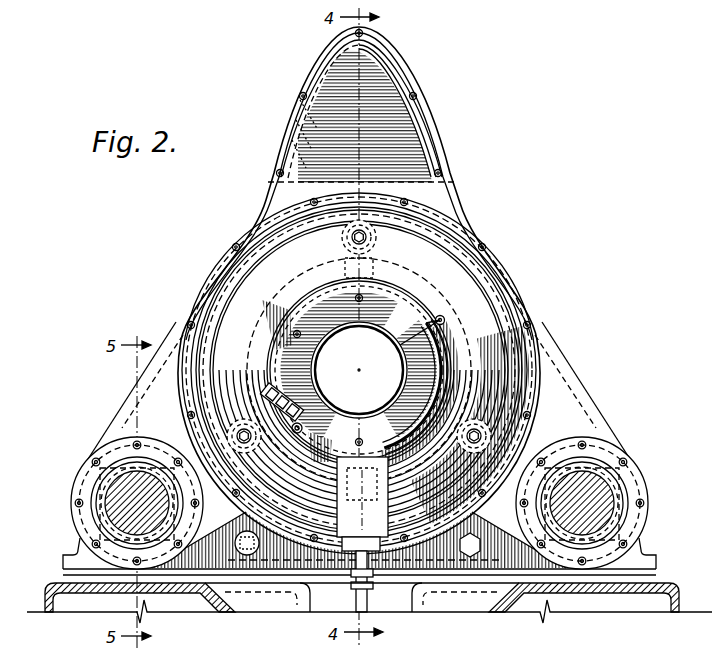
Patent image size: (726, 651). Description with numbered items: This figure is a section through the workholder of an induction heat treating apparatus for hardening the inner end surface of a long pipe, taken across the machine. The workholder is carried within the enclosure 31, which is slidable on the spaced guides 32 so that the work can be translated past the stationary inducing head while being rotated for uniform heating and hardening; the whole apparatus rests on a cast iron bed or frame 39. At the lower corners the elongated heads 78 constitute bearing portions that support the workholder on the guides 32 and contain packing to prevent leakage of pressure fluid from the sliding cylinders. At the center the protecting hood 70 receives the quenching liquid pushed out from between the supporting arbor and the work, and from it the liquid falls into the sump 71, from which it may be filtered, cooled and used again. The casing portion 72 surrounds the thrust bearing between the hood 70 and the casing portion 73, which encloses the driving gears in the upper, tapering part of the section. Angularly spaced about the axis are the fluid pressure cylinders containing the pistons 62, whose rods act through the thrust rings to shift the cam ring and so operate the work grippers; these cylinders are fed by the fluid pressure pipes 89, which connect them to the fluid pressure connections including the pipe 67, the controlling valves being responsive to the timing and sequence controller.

The enclosure 31 is at (490, 258).
The spaced guides 32 is at (110, 491).
The cast iron bed or frame 39 is at (572, 594).
The pistons 62 is at (374, 256).
The fluid pressure pipe 67 is at (370, 603).
The protecting hood 70 is at (314, 361).
The sump 71 is at (322, 600).
The casing portion 72 is at (296, 294).
The casing portion 73 is at (330, 117).
The elongated head 78 is at (147, 462).
The fluid pressure pipes 89 is at (438, 314).